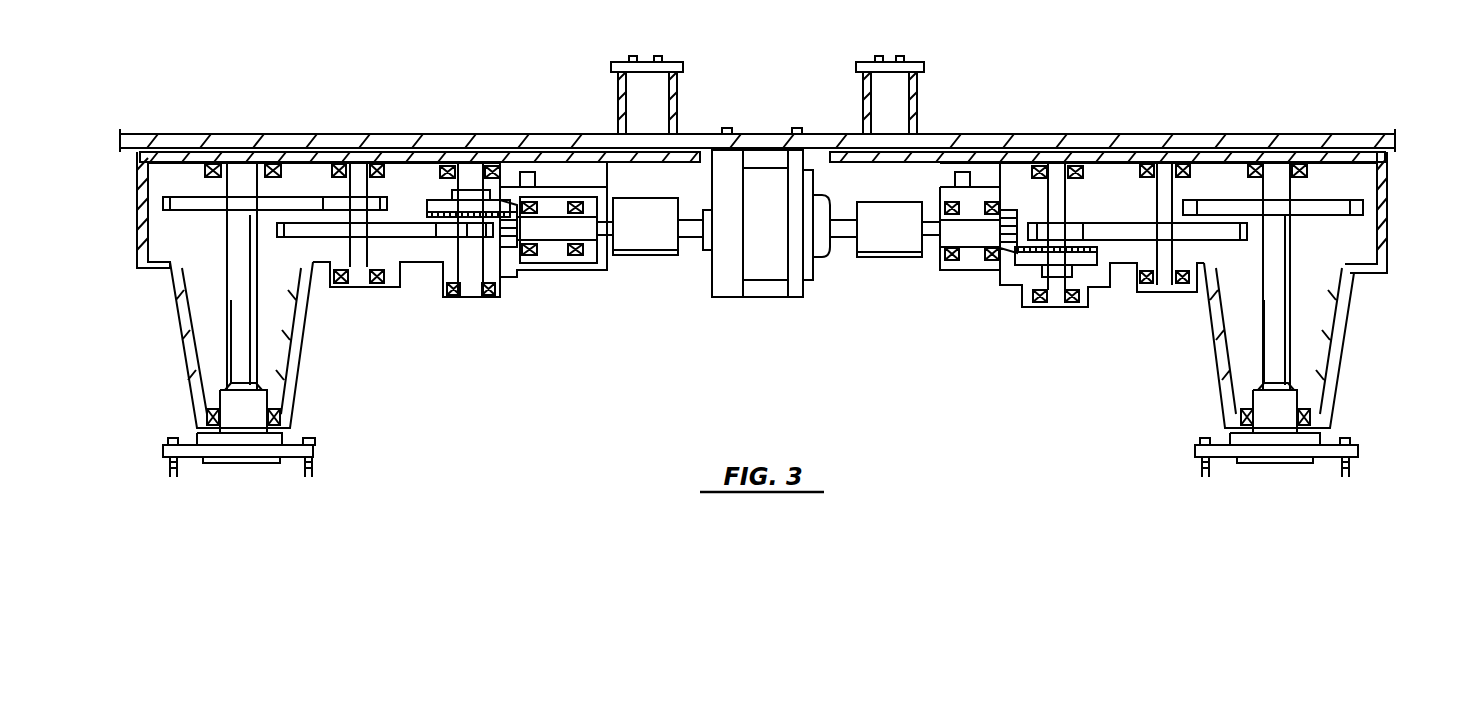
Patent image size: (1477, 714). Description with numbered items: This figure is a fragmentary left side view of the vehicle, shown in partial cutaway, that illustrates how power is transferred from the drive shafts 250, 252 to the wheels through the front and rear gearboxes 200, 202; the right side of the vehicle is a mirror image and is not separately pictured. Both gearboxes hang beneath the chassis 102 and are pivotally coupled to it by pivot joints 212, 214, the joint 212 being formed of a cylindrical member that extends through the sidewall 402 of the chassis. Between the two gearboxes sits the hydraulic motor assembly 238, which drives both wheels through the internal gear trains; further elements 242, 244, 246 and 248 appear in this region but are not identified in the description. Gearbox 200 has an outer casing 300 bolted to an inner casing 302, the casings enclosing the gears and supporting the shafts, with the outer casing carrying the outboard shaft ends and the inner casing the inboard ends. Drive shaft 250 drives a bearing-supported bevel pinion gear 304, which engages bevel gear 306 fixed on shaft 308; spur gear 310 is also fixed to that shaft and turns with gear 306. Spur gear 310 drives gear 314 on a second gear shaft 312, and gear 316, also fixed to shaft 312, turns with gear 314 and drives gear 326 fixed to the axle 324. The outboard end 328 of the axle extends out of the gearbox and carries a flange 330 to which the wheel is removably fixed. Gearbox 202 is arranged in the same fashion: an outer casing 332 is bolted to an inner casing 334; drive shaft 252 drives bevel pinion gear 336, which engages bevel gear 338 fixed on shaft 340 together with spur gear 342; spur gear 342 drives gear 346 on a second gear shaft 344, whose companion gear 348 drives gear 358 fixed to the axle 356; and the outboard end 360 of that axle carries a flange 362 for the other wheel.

The chassis 102 is at (1003, 137).
The front gearbox 200 is at (451, 394).
The rear gearbox 202 is at (1078, 361).
The pivot joint 212 is at (683, 87).
The pivot joint 214 is at (863, 82).
The hydraulic motor assembly 238 is at (767, 267).
The first coupling 242 is at (690, 240).
The second coupling 244 is at (843, 243).
The first motor 246 is at (657, 240).
The second motor 248 is at (890, 250).
The drive shaft 250 is at (605, 185).
The drive shaft 252 is at (932, 200).
The outer casing 300 is at (500, 300).
The inner casing 302 is at (428, 160).
The bevel pinion gear 304 is at (543, 232).
The bevel gear 306 is at (412, 200).
The shaft 308 is at (462, 300).
The spur gear 310 is at (455, 234).
The second gear shaft 312 is at (351, 270).
The gear 314 is at (420, 230).
The gear 316 is at (345, 205).
The axle 324 is at (233, 361).
The gear 326 is at (181, 195).
The outboard end 328 is at (293, 458).
The flange 330 is at (317, 453).
The outer casing 332 is at (1217, 387).
The inner casing 334 is at (1345, 152).
The bevel pinion gear 336 is at (980, 237).
The bevel gear 338 is at (1027, 272).
The shaft 340 is at (1052, 163).
The spur gear 342 is at (1065, 233).
The second gear shaft 344 is at (1158, 287).
The gear 346 is at (1237, 246).
The gear 348 is at (1180, 205).
The axle 356 is at (1278, 363).
The gear 358 is at (1327, 202).
The outboard end 360 is at (1320, 457).
The flange 362 is at (1227, 455).
The sidewall 402 is at (1170, 150).